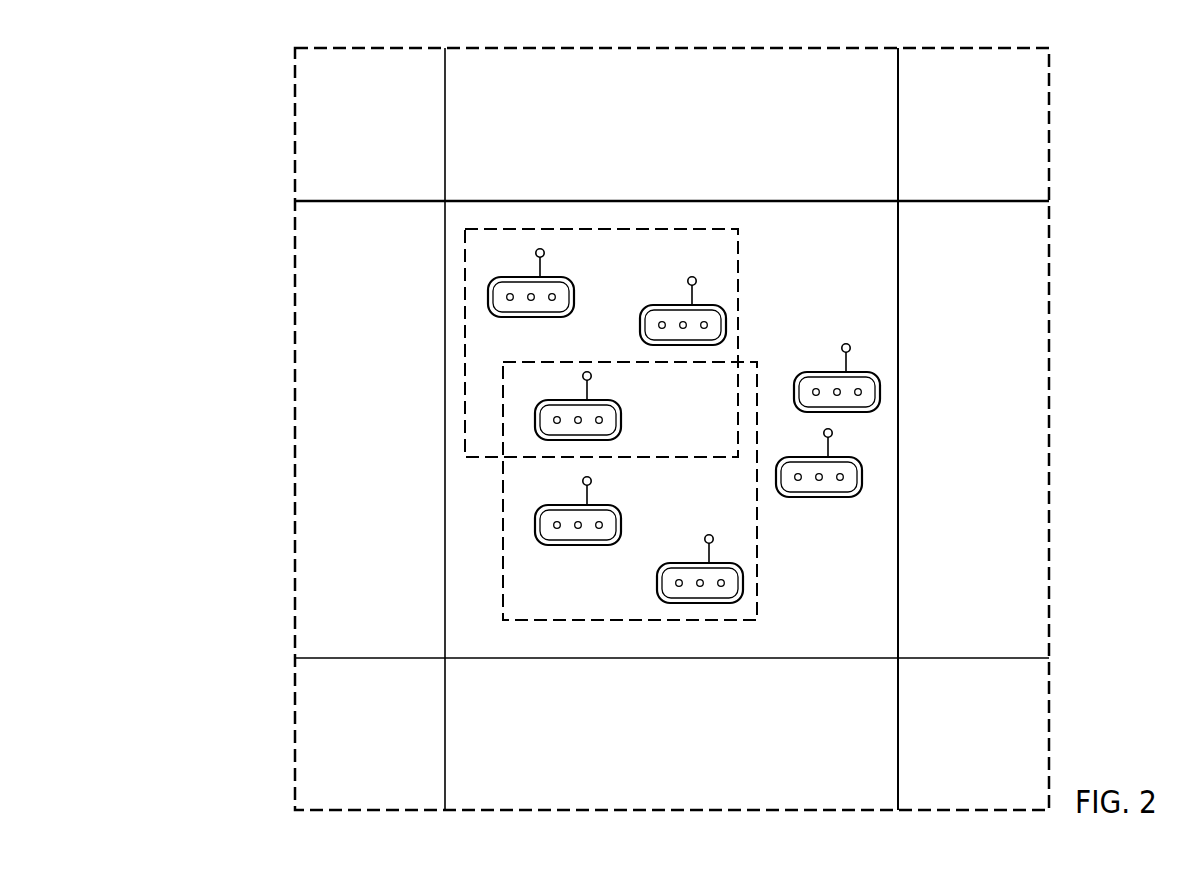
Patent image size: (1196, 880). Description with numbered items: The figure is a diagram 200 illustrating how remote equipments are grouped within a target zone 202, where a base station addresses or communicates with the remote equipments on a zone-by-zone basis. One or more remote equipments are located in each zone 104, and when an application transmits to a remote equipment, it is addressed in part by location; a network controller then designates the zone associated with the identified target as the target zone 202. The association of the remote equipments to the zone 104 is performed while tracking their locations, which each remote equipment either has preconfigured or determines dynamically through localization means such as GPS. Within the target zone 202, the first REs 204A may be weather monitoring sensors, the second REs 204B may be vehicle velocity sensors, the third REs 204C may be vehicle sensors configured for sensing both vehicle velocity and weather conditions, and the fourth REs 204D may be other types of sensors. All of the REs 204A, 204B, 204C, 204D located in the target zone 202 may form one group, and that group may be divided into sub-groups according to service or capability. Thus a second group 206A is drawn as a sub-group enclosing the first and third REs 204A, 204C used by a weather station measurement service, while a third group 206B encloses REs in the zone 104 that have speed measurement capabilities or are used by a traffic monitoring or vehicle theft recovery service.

The zone 104 is at (659, 139).
The storage structure 200 is at (266, 427).
The target zone 202 is at (670, 659).
The first remote equipment 204A is at (575, 293).
The second remote equipment 204B is at (622, 525).
The third remote equipment 204C is at (622, 418).
The fourth remote equipment 204D is at (825, 371).
The second group 206A is at (748, 275).
The third group 206B is at (766, 573).